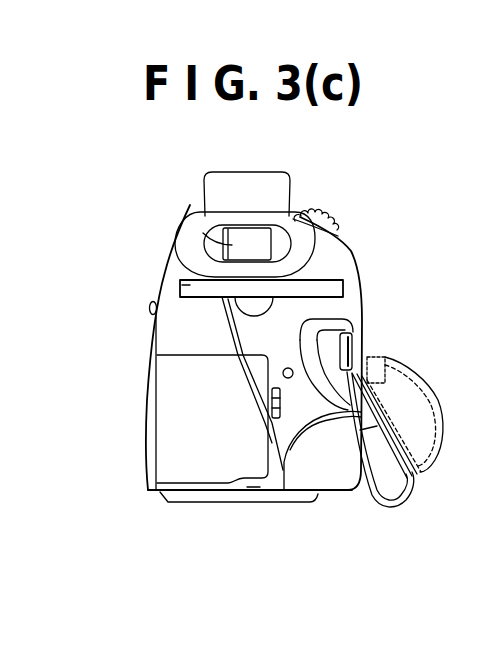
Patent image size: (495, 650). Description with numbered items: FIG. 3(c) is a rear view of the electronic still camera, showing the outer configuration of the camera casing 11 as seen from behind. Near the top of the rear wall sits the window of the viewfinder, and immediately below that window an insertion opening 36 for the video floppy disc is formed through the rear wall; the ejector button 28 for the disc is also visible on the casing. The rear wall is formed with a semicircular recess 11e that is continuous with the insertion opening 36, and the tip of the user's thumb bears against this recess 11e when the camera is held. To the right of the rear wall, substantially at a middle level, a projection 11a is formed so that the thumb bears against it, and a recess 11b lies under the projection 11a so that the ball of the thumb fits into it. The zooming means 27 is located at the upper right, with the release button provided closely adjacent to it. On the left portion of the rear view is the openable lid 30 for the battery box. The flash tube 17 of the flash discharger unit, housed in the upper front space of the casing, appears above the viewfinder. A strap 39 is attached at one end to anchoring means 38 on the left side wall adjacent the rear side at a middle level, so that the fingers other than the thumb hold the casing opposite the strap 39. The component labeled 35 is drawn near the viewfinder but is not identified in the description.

The camera casing 11 is at (322, 266).
The projection 11a is at (322, 332).
The recess 11b is at (310, 467).
The semicircular recess 11e is at (240, 309).
The flash tube 17 is at (265, 190).
The zooming means 27 is at (335, 228).
The ejector button 28 is at (150, 310).
The openable lid 30 is at (178, 417).
The eyecup 35 is at (200, 232).
The insertion opening 36 is at (168, 280).
The anchoring means 38 is at (353, 340).
The strap 39 is at (423, 468).